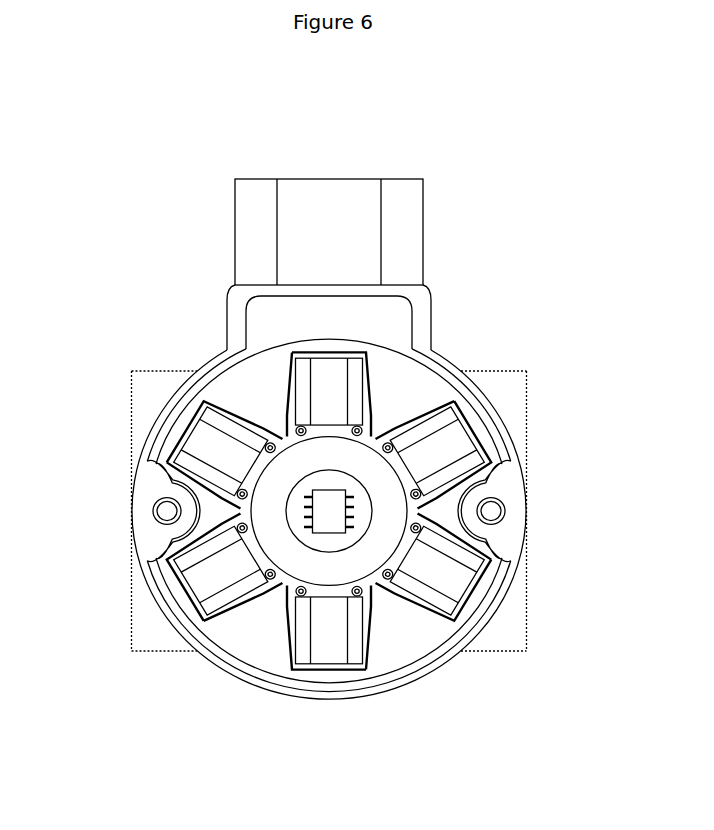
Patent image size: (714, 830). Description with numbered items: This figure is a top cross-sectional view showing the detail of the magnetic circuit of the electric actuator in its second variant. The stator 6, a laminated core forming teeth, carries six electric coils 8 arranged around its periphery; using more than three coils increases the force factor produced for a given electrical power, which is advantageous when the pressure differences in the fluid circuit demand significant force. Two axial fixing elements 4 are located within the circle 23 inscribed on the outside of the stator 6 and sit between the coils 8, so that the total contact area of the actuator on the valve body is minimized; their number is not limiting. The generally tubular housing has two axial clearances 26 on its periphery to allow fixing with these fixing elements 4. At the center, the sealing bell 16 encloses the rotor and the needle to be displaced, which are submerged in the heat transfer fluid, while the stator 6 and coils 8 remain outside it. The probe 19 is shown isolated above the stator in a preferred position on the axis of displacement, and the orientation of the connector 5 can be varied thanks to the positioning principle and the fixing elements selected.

The fixing elements 4 is at (498, 518).
The connector 5 is at (346, 211).
The stator 6 is at (243, 378).
The electric coils 8 is at (438, 575).
The sealing bell 16 is at (357, 455).
The probe 19 is at (333, 515).
The circle 23 is at (483, 397).
The axial clearances 26 is at (165, 508).